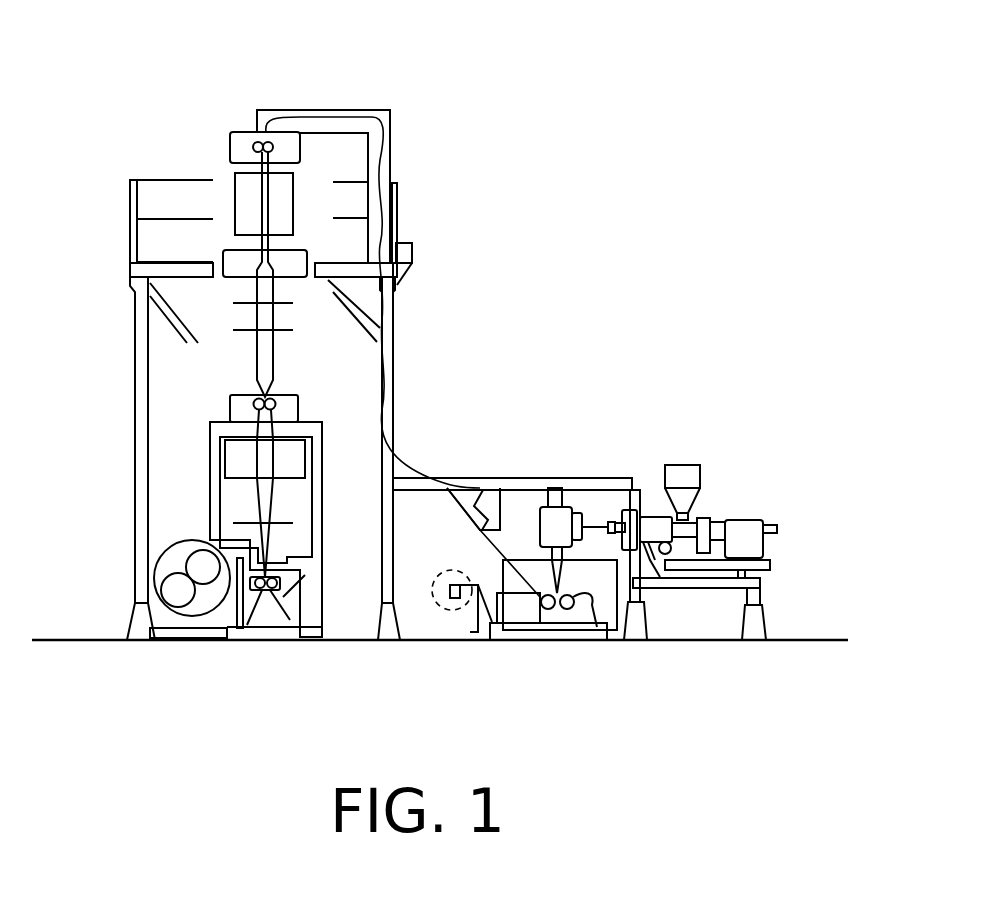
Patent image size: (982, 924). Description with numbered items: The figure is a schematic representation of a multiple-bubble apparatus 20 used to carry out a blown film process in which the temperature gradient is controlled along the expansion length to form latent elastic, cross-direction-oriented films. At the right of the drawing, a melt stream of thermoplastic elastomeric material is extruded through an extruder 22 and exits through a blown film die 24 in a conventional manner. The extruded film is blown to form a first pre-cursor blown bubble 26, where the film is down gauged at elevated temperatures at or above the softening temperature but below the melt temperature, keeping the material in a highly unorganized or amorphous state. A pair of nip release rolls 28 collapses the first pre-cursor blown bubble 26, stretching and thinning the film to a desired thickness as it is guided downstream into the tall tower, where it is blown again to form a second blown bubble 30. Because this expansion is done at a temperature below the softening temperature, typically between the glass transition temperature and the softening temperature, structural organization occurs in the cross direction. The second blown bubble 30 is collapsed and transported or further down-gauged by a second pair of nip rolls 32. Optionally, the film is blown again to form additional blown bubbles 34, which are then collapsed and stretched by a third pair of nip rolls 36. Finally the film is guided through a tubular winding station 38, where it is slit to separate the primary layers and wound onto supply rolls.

The multiple-bubble apparatus 20 is at (500, 86).
The extruder 22 is at (724, 510).
The blown film die 24 is at (561, 518).
The first pre-cursor blown bubble 26 is at (575, 580).
The pair of nip release rolls 28 is at (570, 612).
The second blown bubble 30 is at (292, 347).
The second pair of nip rolls 32 is at (256, 398).
The additional blown bubbles 34 is at (228, 503).
The third pair of nip rolls 36 is at (257, 592).
The tubular winding station 38 is at (193, 612).